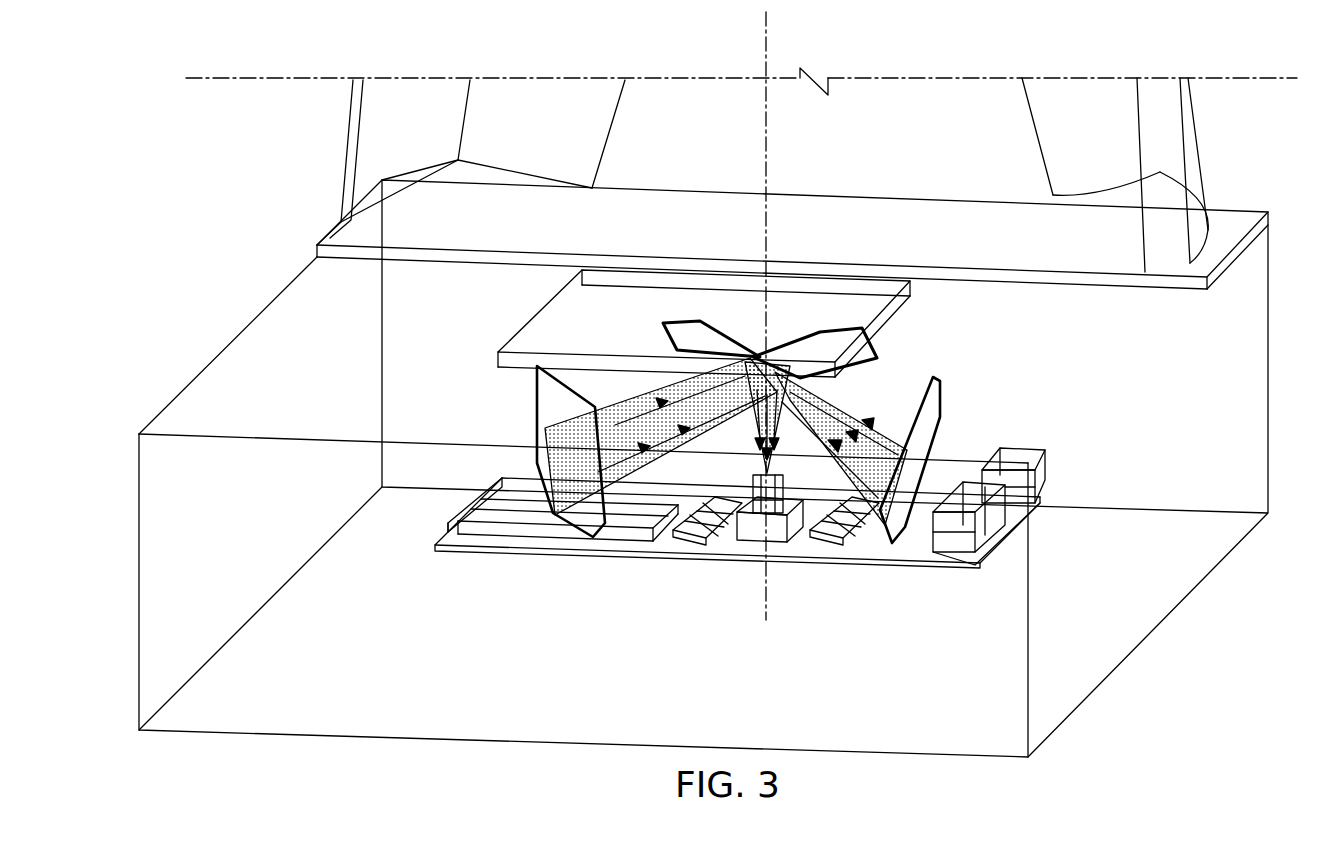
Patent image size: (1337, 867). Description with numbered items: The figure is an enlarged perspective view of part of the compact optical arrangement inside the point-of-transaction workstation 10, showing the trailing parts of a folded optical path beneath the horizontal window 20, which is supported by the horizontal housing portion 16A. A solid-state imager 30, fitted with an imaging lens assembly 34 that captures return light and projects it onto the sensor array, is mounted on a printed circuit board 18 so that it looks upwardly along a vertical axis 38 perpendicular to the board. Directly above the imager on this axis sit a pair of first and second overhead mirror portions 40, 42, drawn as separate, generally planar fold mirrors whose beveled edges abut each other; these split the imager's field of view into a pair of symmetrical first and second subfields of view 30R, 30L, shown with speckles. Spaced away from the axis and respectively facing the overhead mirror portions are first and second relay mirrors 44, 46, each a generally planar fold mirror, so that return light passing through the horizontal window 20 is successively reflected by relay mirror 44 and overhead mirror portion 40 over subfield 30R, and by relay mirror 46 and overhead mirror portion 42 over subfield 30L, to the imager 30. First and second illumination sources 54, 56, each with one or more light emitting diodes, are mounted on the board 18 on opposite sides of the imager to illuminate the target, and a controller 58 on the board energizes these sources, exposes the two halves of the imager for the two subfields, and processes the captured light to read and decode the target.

The point-of-transaction workstation 10 is at (257, 218).
The horizontal housing portion 16A is at (280, 302).
The printed circuit board 18 is at (915, 537).
The horizontal window 20 is at (541, 326).
The solid-state imager 30 is at (745, 491).
The second subfield of view 30L is at (641, 421).
The first subfield of view 30R is at (893, 432).
The imaging lens assembly 34 is at (789, 484).
The vertical axis 38 is at (769, 24).
The first overhead mirror portion 40 is at (874, 341).
The second overhead mirror portion 42 is at (665, 336).
The first relay mirror 44 is at (943, 397).
The second relay mirror 46 is at (548, 421).
The first illumination source 54 is at (836, 555).
The second illumination source 56 is at (699, 552).
The controller 58 is at (452, 513).